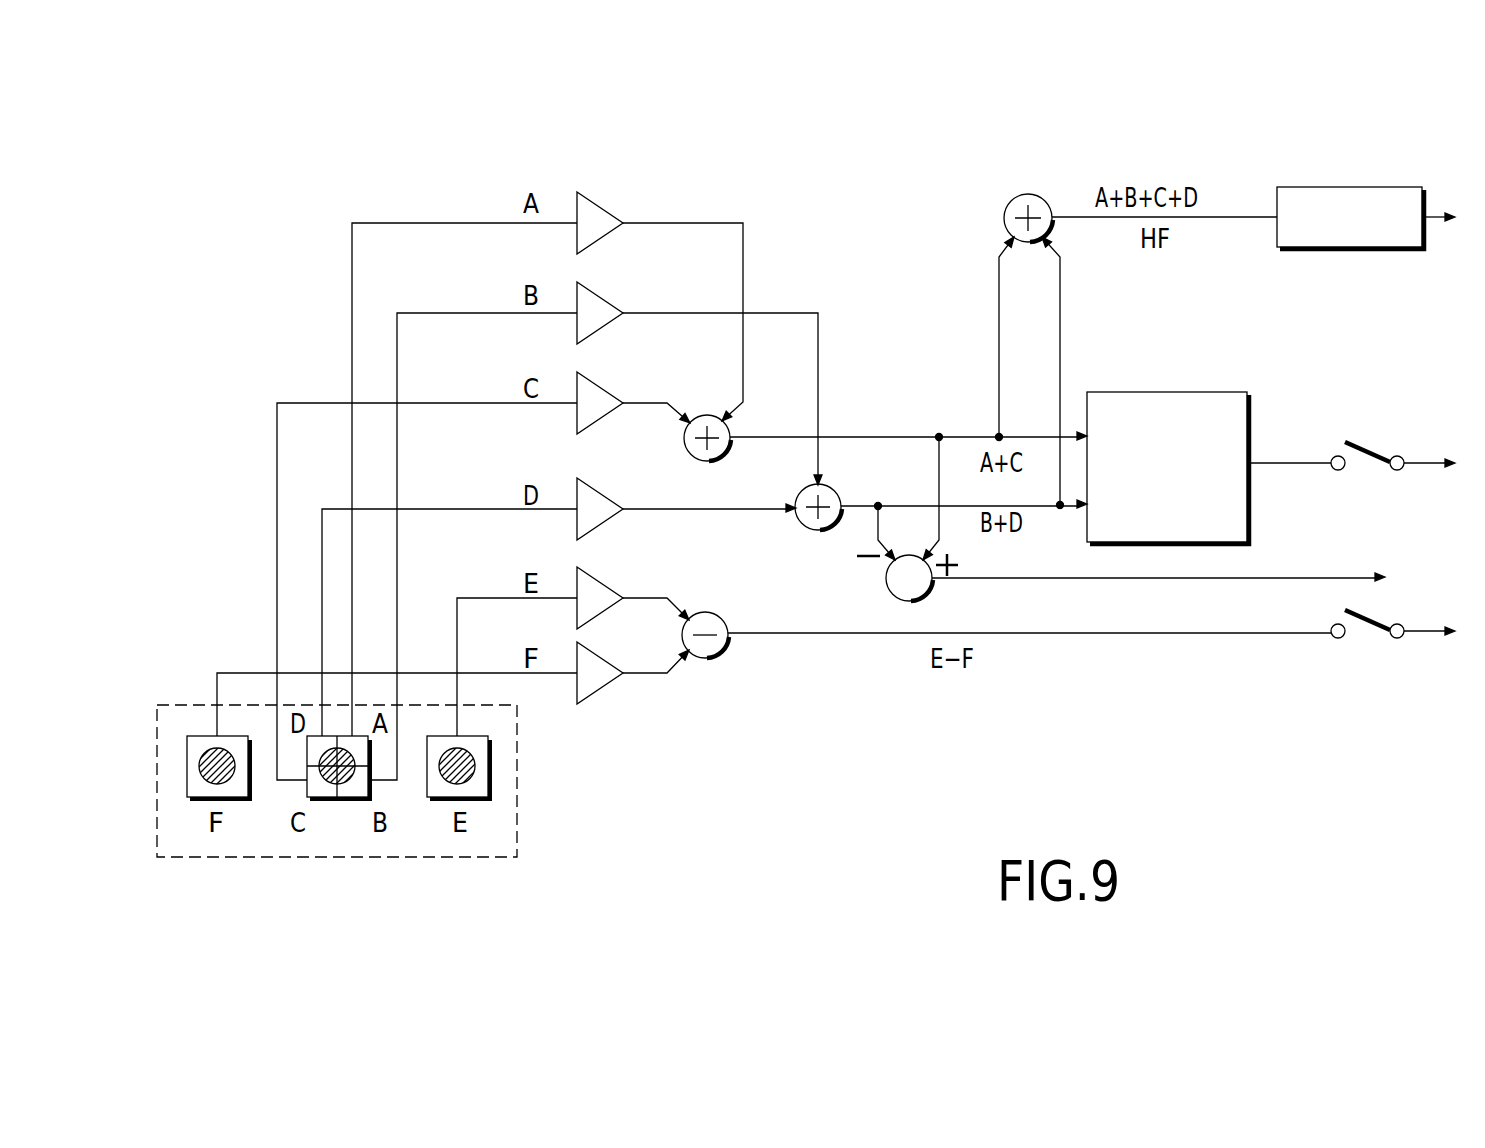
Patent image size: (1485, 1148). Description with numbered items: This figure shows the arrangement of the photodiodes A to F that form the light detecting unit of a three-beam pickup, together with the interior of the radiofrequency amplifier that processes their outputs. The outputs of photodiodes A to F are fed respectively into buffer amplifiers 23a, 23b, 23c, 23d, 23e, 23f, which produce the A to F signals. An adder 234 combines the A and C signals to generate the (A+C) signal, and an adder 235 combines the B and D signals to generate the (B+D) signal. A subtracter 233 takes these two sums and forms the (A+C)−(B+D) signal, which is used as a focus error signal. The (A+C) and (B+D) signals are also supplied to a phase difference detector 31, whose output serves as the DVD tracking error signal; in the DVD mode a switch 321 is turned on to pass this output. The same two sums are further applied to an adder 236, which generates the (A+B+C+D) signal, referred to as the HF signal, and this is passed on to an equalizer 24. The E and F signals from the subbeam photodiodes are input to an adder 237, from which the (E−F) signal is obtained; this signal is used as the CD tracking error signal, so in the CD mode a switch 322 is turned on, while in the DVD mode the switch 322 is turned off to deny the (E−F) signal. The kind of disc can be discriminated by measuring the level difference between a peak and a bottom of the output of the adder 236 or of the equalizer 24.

The buffer amplifier 23a is at (596, 206).
The buffer amplifier 23b is at (596, 296).
The buffer amplifier 23c is at (596, 386).
The buffer amplifier 23d is at (590, 486).
The buffer amplifier 23e is at (596, 580).
The buffer amplifier 23f is at (594, 694).
The adder 234 is at (722, 459).
The adder 235 is at (836, 490).
The adder 236 is at (1007, 204).
The subtracter 233 is at (893, 598).
The adder 237 is at (722, 654).
The equalizer 24 is at (1370, 185).
The phase difference detector 31 is at (1158, 390).
The switch 321 is at (1362, 437).
The switch 322 is at (1358, 606).